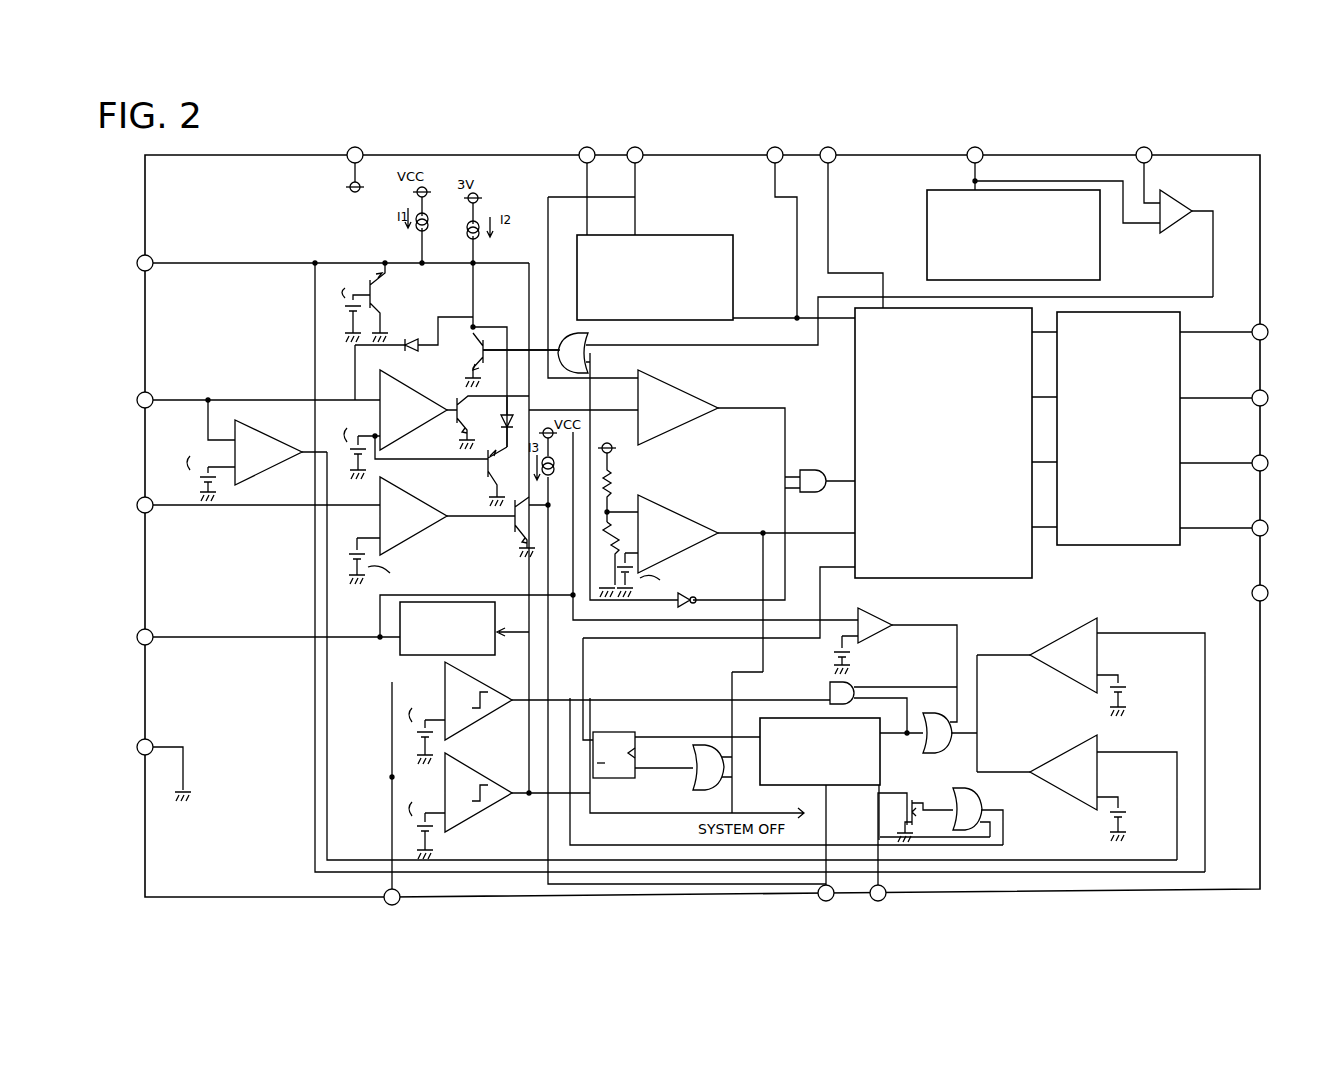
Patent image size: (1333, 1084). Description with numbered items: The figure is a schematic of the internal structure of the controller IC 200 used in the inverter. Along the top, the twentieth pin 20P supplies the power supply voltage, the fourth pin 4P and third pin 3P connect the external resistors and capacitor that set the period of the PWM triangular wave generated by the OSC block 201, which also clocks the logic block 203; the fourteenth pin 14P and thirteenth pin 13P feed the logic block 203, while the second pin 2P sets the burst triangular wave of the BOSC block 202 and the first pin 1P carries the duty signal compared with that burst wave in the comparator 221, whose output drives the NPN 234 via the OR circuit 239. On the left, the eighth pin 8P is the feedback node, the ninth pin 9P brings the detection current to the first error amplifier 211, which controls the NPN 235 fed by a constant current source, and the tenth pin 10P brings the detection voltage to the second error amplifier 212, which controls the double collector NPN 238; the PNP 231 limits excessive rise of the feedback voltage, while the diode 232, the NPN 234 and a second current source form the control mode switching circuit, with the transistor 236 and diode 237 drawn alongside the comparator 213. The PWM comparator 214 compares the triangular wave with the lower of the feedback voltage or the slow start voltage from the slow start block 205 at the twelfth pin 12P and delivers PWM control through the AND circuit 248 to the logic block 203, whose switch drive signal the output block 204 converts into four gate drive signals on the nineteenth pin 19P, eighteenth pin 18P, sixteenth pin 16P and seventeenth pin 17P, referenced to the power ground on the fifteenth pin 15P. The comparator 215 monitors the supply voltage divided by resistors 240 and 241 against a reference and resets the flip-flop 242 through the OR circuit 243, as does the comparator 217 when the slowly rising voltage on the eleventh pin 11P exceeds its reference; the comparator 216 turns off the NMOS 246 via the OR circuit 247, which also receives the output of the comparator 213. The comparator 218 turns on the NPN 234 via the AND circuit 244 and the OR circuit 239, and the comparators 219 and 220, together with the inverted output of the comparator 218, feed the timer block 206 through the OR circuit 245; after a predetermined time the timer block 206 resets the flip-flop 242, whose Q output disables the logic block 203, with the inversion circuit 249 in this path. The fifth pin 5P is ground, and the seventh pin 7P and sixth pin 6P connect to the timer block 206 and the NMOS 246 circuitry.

The controller IC 200 is at (228, 155).
The oscillation (OSC) block 201 is at (682, 232).
The BOSC block 202 is at (1100, 262).
The logic block 203 is at (968, 580).
The output block 204 is at (1120, 546).
The slow start block 205 is at (400, 650).
The timer block 206 is at (790, 785).
The first error amplifier 211 is at (403, 380).
The second error amplifier 212 is at (403, 487).
The comparator 213 is at (272, 434).
The PWM comparator 214 is at (680, 382).
The comparator 215 is at (678, 510).
The comparator 216 is at (488, 722).
The comparator 217 is at (495, 808).
The comparator 218 is at (885, 613).
The comparator 219 is at (1062, 618).
The comparator 220 is at (1062, 745).
The comparator 221 is at (1186, 223).
The PNP transistor 231 is at (369, 301).
The diode 232 is at (414, 358).
The NPN transistor 234 is at (503, 386).
The NPN transistor 235 is at (480, 422).
The transistor 236 is at (485, 476).
The diode 237 is at (512, 406).
The double collector type NPN transistor 238 is at (510, 527).
The OR circuit 239 is at (590, 353).
The resistor 240 is at (622, 482).
The resistor 241 is at (622, 559).
The flip-flop (FF) circuit 242 is at (625, 730).
The OR circuit 243 is at (690, 785).
The AND circuit 244 is at (830, 684).
The OR circuit 245 is at (943, 715).
The NMOS 246 is at (908, 795).
The OR circuit 247 is at (955, 790).
The AND circuit 248 is at (832, 470).
The inversion circuit 249 is at (696, 604).
The first pin 1P is at (1162, 158).
The second pin 2P is at (987, 152).
The third pin 3P is at (643, 177).
The fourth pin 4P is at (595, 177).
The fifth pin 5P is at (149, 762).
The sixth pin 6P is at (891, 861).
The seventh pin 7P is at (808, 857).
The eighth pin 8P is at (319, 263).
The ninth pin 9P is at (245, 408).
The tenth pin 10P is at (240, 514).
The eleventh pin 11P is at (401, 808).
The twelfth pin 12P is at (250, 646).
The thirteenth pin 13P is at (848, 213).
The fourteenth pin 14P is at (781, 218).
The fifteenth pin 15P is at (1260, 588).
The sixteenth pin 16P is at (1242, 458).
The seventeenth pin 17P is at (1242, 523).
The eighteenth pin 18P is at (1242, 393).
The nineteenth pin 19P is at (1242, 328).
The twentieth pin 20P is at (365, 155).